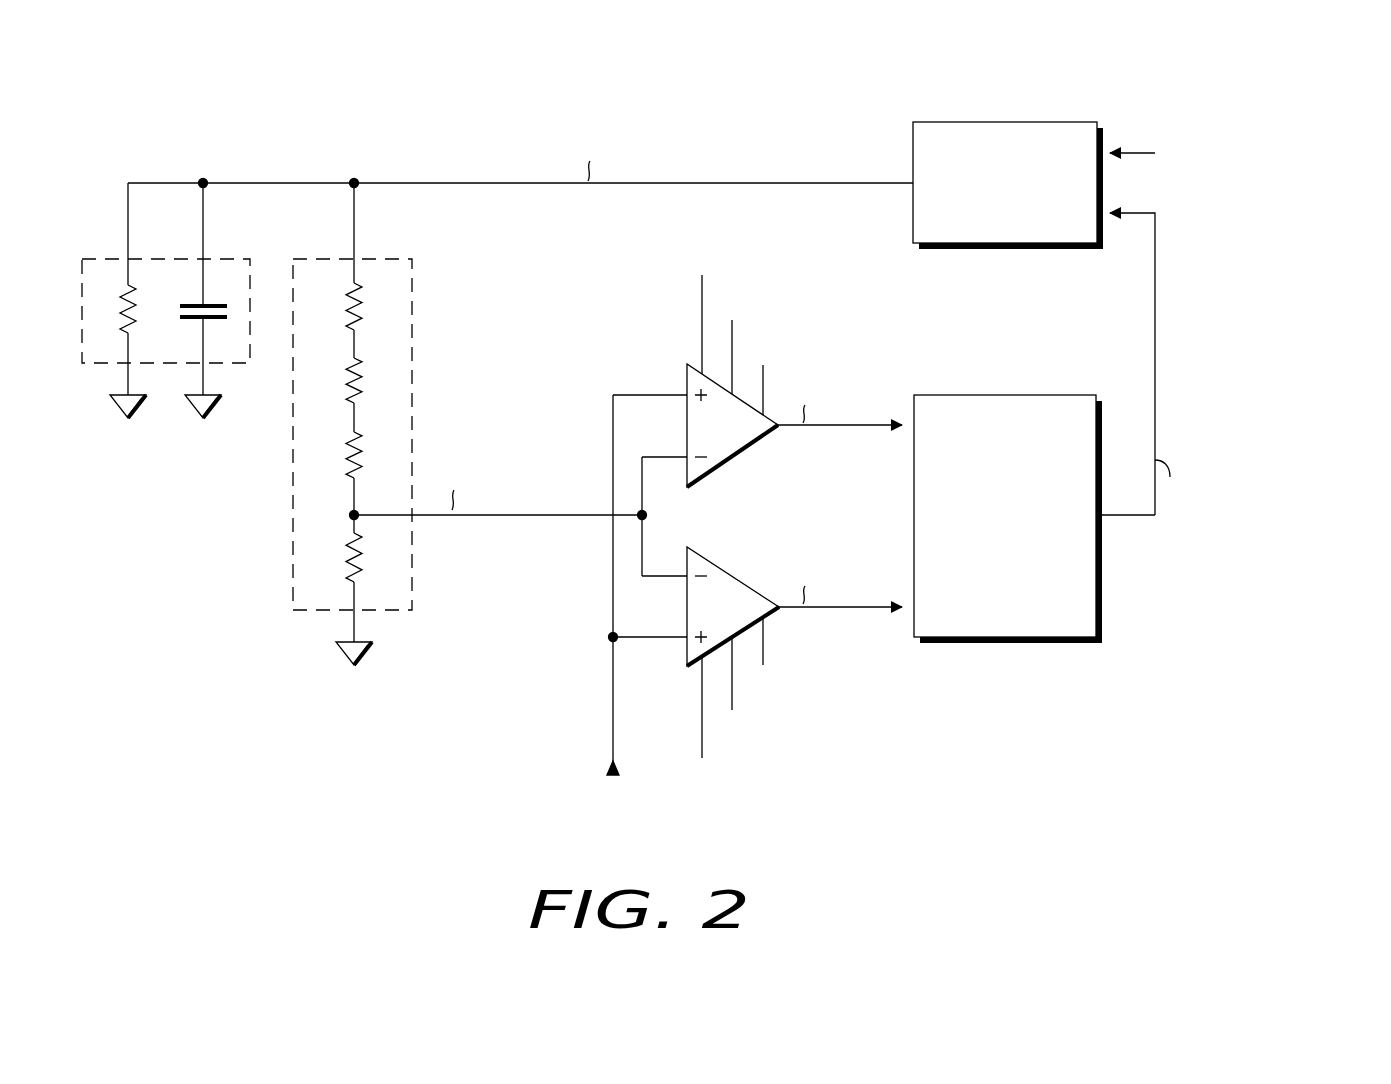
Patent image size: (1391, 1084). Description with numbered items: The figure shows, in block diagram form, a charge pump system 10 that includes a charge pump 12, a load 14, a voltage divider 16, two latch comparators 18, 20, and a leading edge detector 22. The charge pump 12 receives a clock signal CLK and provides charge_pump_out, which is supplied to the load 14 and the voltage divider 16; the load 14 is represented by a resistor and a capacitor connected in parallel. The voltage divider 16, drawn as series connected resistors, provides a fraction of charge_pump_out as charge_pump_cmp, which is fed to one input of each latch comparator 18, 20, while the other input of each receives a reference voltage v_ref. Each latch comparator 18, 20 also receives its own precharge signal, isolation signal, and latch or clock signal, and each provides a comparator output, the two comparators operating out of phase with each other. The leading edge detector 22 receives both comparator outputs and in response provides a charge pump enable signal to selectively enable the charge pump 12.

The charge pump system 10 is at (1308, 108).
The charge pump 12 is at (1058, 121).
The load 14 is at (241, 257).
The voltage divider 16 is at (412, 283).
The latch comparator 18 is at (740, 456).
The latch comparator 20 is at (722, 563).
The leading edge detector 22 is at (1066, 605).